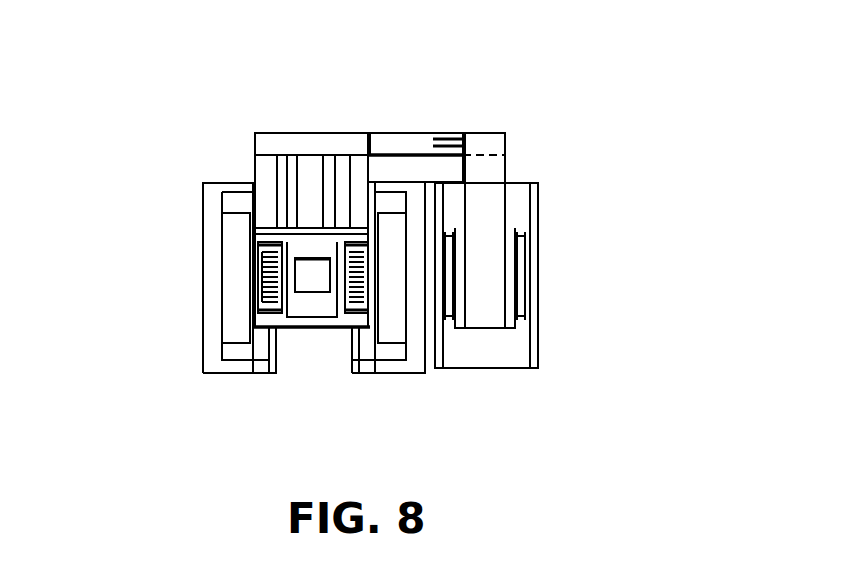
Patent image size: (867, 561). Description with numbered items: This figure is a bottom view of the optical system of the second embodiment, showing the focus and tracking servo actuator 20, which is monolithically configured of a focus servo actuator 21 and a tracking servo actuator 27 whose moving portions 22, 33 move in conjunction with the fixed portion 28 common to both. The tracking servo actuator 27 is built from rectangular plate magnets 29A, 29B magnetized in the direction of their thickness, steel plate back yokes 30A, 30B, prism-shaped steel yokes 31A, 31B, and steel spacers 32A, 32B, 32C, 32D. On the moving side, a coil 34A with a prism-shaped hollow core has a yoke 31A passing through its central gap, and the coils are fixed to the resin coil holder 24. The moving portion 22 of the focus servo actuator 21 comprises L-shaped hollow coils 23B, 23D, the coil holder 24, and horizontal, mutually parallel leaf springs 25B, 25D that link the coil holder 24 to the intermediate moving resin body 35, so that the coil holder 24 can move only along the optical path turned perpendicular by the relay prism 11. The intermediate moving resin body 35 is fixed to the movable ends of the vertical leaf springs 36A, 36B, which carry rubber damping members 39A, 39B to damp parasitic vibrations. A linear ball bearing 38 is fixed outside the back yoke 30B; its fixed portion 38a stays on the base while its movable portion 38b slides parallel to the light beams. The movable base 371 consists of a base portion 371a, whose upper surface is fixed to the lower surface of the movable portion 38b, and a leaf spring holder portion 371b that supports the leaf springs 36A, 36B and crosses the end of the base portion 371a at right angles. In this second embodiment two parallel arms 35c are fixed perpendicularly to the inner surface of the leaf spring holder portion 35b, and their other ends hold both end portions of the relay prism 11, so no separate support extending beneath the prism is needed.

The relay prism 11 is at (317, 285).
The focus and tracking servo actuator 20 is at (200, 245).
The focus servo actuator 21 is at (307, 233).
The moving portion 22 is at (320, 78).
The L-shaped hollow coil 23B is at (252, 182).
The L-shaped hollow coil 23D is at (347, 236).
The coil holder 24 is at (282, 210).
The leaf spring 25B is at (252, 178).
The leaf spring 25D is at (353, 205).
The tracking servo actuator 27 is at (517, 371).
The fixed portion 28 is at (560, 422).
The plate magnet 29A is at (233, 337).
The plate magnet 29B is at (395, 337).
The back yoke 30A is at (203, 355).
The back yoke 30B is at (423, 363).
The yoke 31A is at (273, 368).
The yoke 31B is at (360, 352).
The spacer 32A is at (242, 362).
The spacer 32B is at (238, 190).
The spacer 32C is at (378, 357).
The spacer 32D is at (390, 190).
The moving portion 33 is at (750, 53).
The coil 34A is at (258, 273).
The intermediate moving resin body 35 is at (430, 78).
The leaf spring holder portion 35b is at (337, 130).
The parallel arms 35c is at (360, 130).
The leaf spring 36A is at (435, 142).
The leaf spring 36B is at (396, 140).
The movable base 371 is at (685, 80).
The base portion 371a is at (510, 192).
The leaf spring holder portion 371b is at (513, 133).
The linear ball bearing 38 is at (738, 163).
The fixed portion 38a is at (537, 257).
The movable portion 38b is at (512, 226).
The rubber damping member 39A is at (497, 182).
The rubber damping member 39B is at (470, 150).